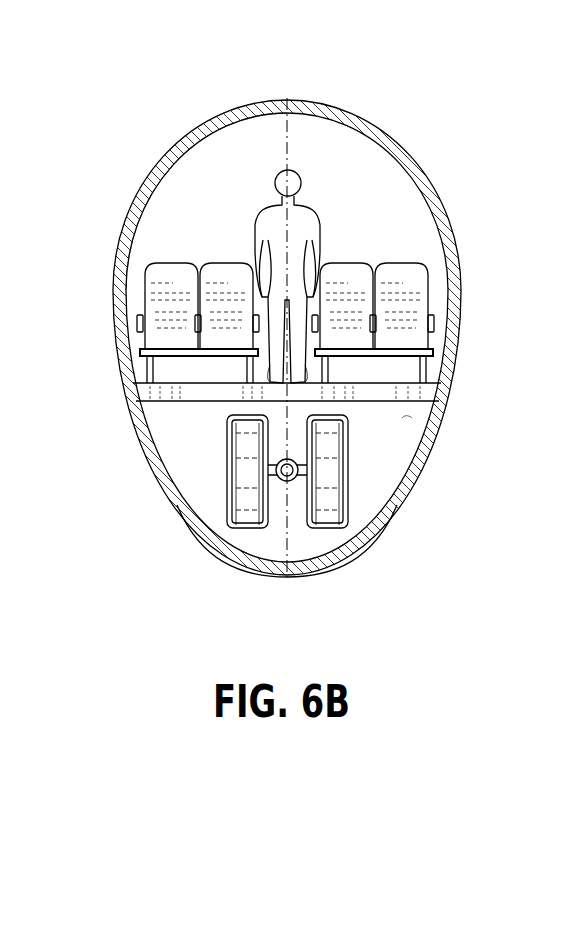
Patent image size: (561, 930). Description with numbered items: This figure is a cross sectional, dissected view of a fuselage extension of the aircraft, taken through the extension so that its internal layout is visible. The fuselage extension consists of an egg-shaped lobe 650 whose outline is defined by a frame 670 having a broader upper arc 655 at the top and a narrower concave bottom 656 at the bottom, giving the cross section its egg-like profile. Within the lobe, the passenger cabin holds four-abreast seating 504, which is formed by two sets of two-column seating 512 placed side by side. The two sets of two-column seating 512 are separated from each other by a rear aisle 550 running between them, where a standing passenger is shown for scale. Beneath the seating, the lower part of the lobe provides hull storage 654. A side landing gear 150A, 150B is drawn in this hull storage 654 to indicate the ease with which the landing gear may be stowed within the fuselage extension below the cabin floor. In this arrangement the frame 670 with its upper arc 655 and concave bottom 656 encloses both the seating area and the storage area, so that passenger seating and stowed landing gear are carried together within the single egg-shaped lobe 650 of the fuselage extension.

The egg-shaped lobe 650 is at (418, 163).
The broader upper arc 655 is at (377, 122).
The frame 670 is at (129, 207).
The two-column seating 512 is at (170, 272).
The four-abreast seating 504 is at (418, 268).
The rear aisle 550 is at (263, 362).
The hull storage 654 is at (402, 418).
The narrower concave bottom 656 is at (178, 508).
The side landing gear 150A is at (334, 466).
The side landing gear 150B is at (416, 482).